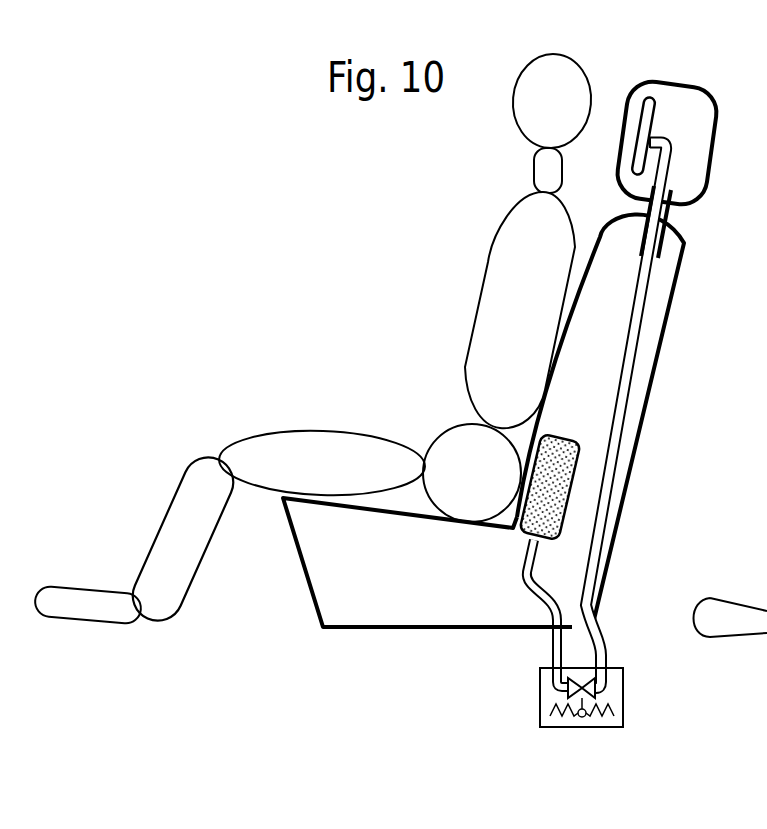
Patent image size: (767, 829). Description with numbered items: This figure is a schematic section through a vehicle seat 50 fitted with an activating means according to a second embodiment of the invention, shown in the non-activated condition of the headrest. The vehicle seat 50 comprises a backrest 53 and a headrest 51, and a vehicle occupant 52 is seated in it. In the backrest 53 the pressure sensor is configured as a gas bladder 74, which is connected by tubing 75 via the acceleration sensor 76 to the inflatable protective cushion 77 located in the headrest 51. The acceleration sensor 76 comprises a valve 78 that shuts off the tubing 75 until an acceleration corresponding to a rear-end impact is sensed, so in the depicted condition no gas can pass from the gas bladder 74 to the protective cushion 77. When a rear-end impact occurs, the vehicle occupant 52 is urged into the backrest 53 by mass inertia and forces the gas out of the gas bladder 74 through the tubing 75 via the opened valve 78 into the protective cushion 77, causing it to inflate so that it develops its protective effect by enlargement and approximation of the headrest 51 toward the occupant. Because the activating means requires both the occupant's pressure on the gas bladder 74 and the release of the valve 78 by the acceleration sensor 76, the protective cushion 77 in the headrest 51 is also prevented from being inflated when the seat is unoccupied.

The vehicle seat 50 is at (403, 611).
The headrest 51 is at (714, 146).
The vehicle occupant 52 is at (484, 270).
The backrest 53 is at (663, 343).
The gas bladder 74 is at (572, 484).
The tubing 75 is at (535, 600).
The acceleration sensor 76 is at (534, 688).
The inflatable protective cushion 77 is at (660, 108).
The valve 78 is at (583, 678).